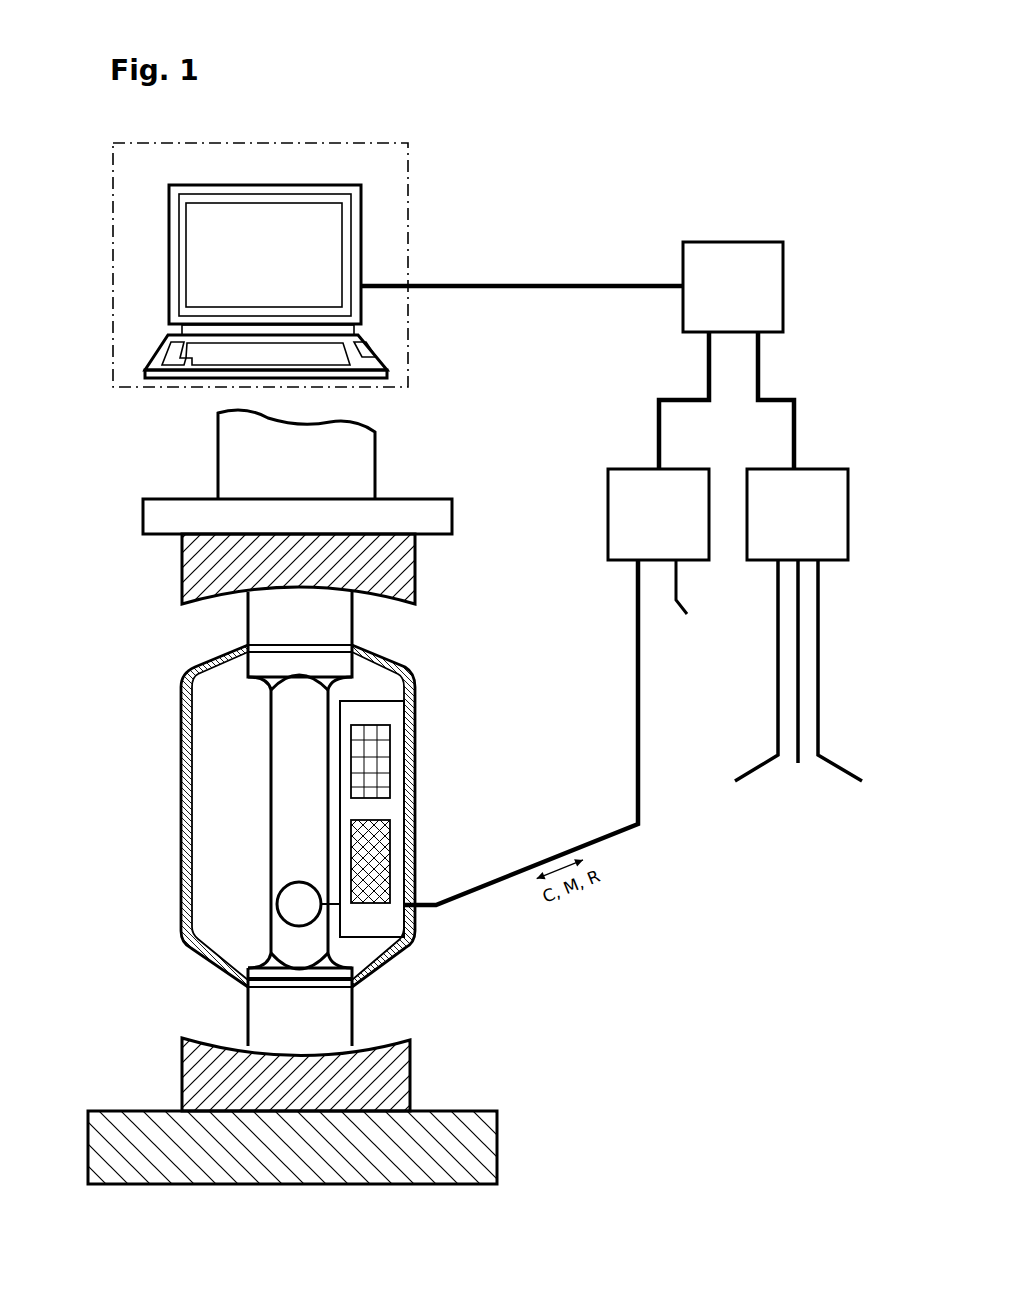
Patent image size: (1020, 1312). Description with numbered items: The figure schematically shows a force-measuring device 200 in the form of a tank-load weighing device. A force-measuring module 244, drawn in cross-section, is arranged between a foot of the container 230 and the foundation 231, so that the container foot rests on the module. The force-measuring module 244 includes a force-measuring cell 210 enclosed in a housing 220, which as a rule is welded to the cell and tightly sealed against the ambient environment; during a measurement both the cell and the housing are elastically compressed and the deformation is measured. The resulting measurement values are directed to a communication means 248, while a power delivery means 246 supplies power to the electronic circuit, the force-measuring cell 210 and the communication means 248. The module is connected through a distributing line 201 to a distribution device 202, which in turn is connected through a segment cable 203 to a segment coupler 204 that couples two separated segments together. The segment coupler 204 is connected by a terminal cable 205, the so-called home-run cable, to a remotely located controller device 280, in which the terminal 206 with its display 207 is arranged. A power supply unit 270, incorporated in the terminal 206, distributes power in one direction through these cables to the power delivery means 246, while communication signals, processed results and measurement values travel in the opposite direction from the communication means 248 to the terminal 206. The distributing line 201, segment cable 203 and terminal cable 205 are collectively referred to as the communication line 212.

The force-measuring device 200 is at (727, 1062).
The distributing line 201 is at (605, 839).
The distribution device 202 is at (735, 625).
The segment cable 203 is at (780, 397).
The segment coupler 204 is at (733, 287).
The terminal cable 205 is at (505, 286).
The terminal 206 is at (291, 185).
The display 207 is at (203, 240).
The force-measuring cell 210 is at (298, 907).
The communication line 212 is at (636, 703).
The housing 220 is at (185, 847).
The container 230 is at (316, 476).
The foundation 231 is at (320, 1164).
The force-measuring module 244 is at (122, 478).
The power delivery means 246 is at (368, 850).
The communication means 248 is at (377, 745).
The power supply unit 270 is at (368, 343).
The controller device 280 is at (363, 142).